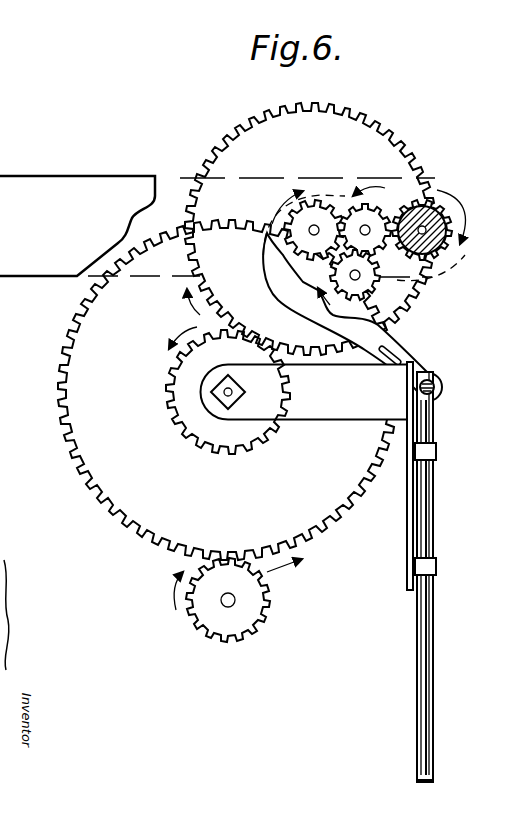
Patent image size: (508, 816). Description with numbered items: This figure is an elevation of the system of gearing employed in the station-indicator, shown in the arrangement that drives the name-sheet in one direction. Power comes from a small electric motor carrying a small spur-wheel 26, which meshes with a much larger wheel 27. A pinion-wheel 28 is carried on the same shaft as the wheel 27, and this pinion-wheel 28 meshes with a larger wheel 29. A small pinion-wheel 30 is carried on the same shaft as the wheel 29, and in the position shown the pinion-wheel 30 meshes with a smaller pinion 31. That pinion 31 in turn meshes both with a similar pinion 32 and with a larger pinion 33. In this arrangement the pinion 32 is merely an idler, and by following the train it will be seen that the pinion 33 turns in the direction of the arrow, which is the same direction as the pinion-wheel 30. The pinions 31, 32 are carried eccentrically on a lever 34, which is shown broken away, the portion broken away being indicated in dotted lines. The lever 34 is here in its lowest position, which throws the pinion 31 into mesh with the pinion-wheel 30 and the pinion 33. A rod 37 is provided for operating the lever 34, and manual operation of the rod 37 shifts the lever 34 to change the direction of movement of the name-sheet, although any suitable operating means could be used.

The spur-wheel 26 is at (266, 600).
The wheel 27 is at (346, 508).
The pinion-wheel 28 is at (236, 456).
The wheel 29 is at (400, 129).
The pinion-wheel 30 is at (297, 223).
The pinion 31 is at (355, 212).
The pinion 32 is at (373, 283).
The pinion 33 is at (448, 212).
The lever 34 is at (275, 268).
The rod 37 is at (430, 537).